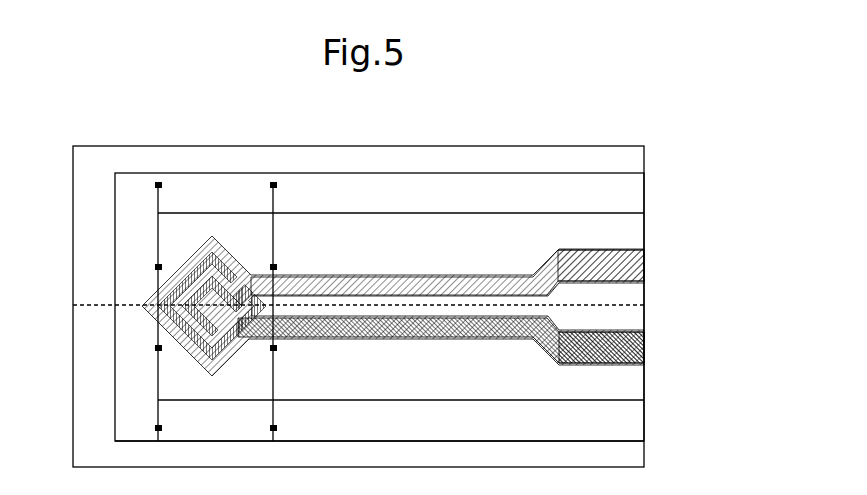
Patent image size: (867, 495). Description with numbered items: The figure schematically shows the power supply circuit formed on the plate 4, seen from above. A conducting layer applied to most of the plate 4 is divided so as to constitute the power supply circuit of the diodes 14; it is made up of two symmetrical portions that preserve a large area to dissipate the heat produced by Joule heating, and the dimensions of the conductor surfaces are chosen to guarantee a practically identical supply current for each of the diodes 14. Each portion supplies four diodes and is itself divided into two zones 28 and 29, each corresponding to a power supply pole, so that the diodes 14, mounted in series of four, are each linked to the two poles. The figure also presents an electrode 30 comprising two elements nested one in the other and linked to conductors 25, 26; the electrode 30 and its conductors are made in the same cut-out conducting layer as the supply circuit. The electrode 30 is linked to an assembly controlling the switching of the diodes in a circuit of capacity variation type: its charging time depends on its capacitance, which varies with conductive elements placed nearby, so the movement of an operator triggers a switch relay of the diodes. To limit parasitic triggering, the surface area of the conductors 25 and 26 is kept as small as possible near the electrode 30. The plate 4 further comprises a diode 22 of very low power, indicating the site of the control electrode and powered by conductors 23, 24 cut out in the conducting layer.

The plate 4 is at (566, 132).
The diodes 14 is at (160, 185).
The diode 22 is at (395, 229).
The conductor 23 is at (622, 296).
The conductor 24 is at (620, 320).
The conductor 25 is at (622, 262).
The conductor 26 is at (625, 355).
The power supply pole portion 28 is at (623, 193).
The power supply pole portion 29 is at (630, 424).
The electrode 30 is at (233, 276).